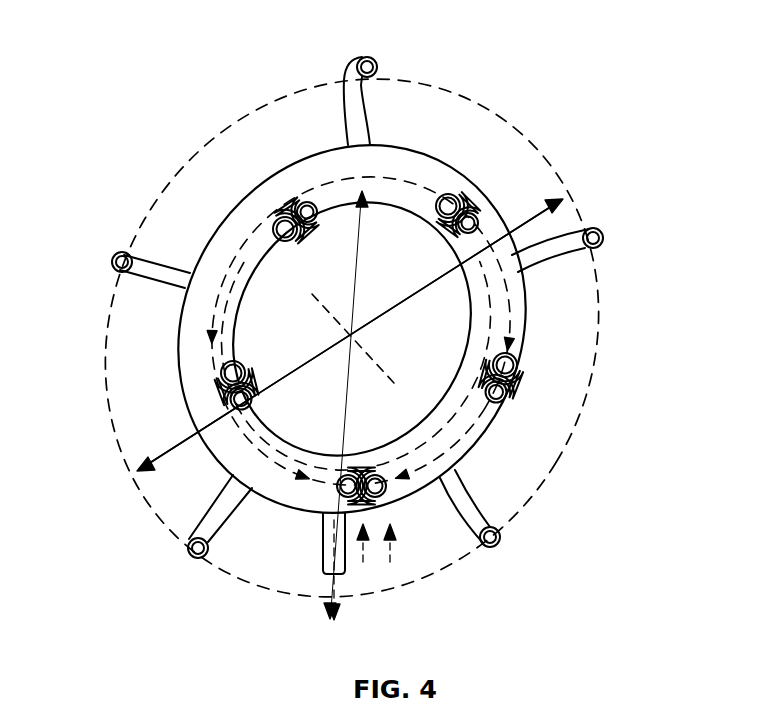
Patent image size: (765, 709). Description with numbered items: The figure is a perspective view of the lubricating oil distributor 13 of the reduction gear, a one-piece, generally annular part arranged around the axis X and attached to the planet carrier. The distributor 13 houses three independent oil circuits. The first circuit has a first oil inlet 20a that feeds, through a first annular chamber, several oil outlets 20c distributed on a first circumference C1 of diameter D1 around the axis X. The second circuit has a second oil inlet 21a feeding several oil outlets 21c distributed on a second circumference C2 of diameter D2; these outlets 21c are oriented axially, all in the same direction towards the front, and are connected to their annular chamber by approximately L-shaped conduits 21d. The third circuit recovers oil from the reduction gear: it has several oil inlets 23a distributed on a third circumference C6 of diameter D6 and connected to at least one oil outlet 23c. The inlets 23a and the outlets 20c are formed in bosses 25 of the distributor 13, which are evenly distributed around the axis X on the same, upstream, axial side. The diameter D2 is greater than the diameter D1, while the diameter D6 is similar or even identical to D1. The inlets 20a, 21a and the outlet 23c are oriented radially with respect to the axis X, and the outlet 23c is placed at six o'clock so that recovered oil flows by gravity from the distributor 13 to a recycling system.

The lubricating oil distributor 13 is at (520, 126).
The first oil inlet 20a is at (363, 557).
The oil outlets 20c is at (302, 210).
The second oil inlet 21a is at (390, 557).
The oil outlets 21c is at (367, 57).
The L-shaped conduits 21d is at (560, 233).
The oil inlets 23a is at (272, 218).
The oil outlet 23c is at (348, 567).
The bosses 25 is at (447, 196).
The first circumference C1 is at (513, 309).
The third circumference C6 is at (356, 366).
The second circumference C2 is at (598, 331).
The diameter of first circumference D1 is at (343, 408).
The diameter of third circumference D6 is at (350, 335).
The diameter of second circumference D2 is at (296, 369).
The axis X is at (382, 368).